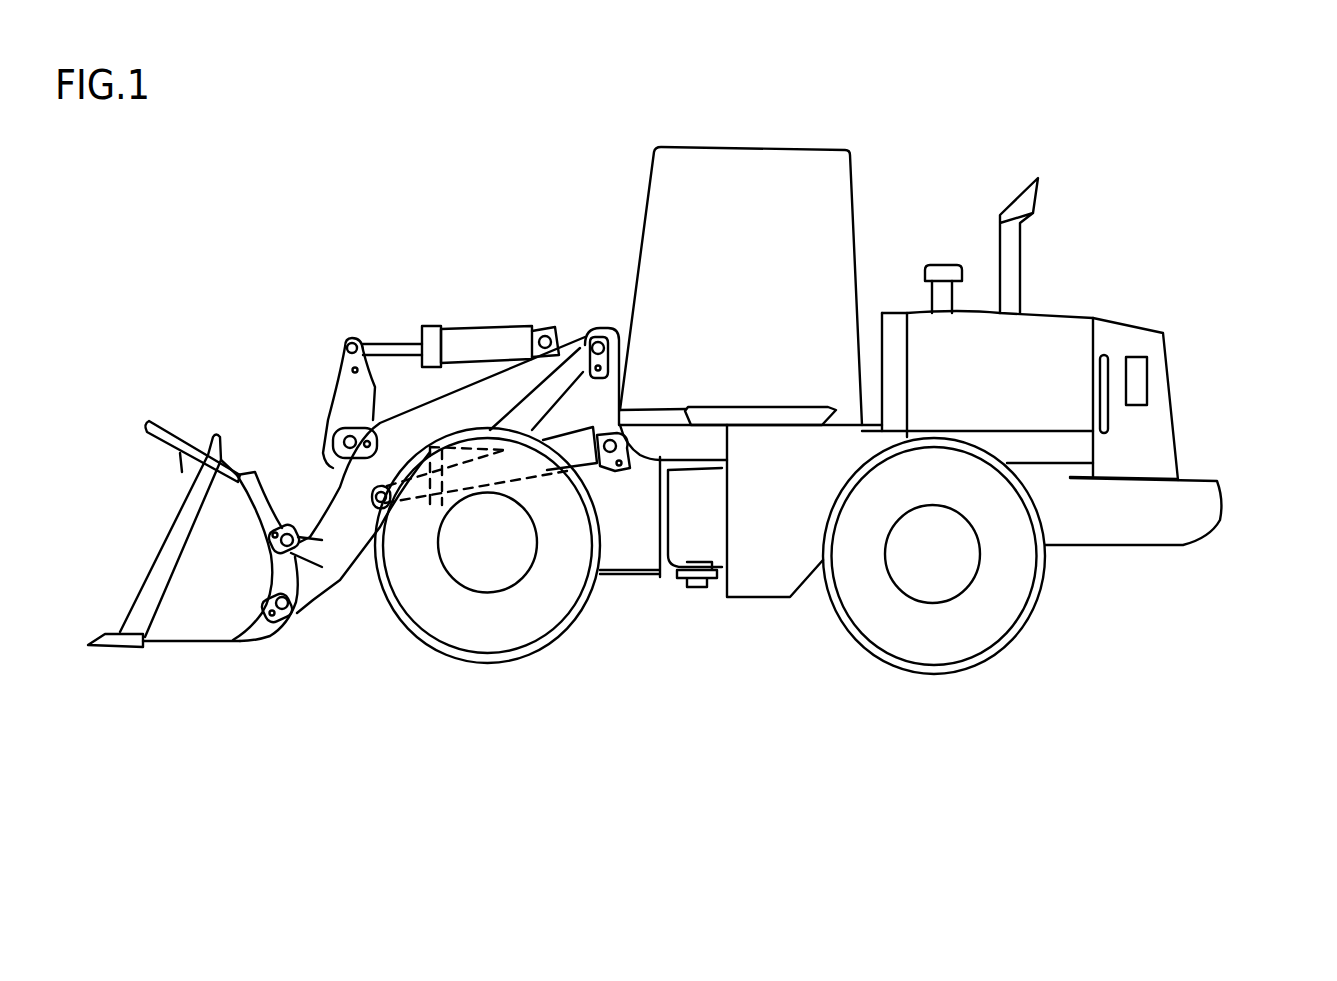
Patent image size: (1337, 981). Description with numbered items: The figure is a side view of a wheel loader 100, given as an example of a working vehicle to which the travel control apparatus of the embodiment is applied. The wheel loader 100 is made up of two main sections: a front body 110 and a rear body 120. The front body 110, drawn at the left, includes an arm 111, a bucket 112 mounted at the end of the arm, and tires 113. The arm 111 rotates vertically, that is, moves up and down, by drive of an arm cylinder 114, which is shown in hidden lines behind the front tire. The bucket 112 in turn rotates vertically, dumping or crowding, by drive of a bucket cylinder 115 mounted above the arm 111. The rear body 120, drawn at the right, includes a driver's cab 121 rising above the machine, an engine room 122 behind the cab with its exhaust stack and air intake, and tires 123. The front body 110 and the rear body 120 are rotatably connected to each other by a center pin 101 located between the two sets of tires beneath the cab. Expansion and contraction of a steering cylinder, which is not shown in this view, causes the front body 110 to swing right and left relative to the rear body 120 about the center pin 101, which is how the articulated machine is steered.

The wheel loader 100 is at (1120, 591).
The center pin 101 is at (700, 588).
The front body 110 is at (583, 367).
The arm 111 is at (322, 507).
The bucket 112 is at (185, 447).
The tires 113 is at (474, 624).
The arm cylinder 114 is at (436, 505).
The bucket cylinder 115 is at (478, 325).
The rear body 120 is at (1195, 502).
The driver's cab 121 is at (697, 168).
The engine room 122 is at (1076, 336).
The tires 123 is at (954, 640).